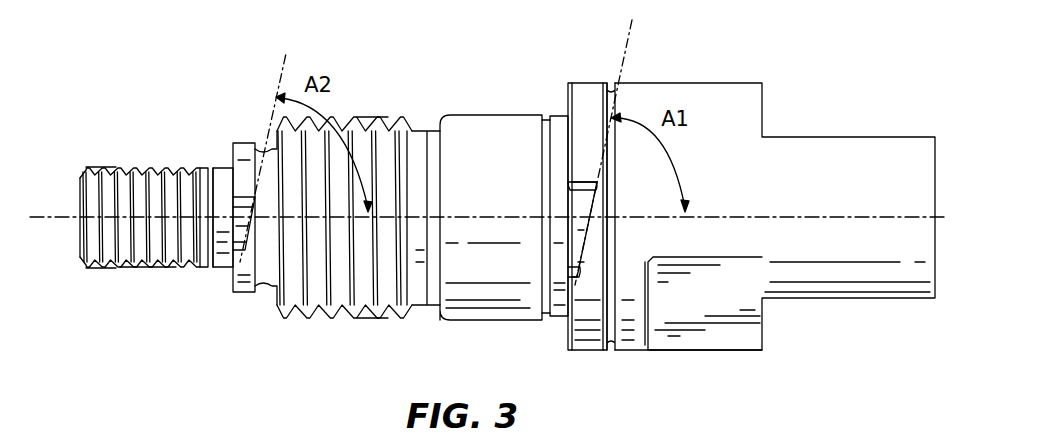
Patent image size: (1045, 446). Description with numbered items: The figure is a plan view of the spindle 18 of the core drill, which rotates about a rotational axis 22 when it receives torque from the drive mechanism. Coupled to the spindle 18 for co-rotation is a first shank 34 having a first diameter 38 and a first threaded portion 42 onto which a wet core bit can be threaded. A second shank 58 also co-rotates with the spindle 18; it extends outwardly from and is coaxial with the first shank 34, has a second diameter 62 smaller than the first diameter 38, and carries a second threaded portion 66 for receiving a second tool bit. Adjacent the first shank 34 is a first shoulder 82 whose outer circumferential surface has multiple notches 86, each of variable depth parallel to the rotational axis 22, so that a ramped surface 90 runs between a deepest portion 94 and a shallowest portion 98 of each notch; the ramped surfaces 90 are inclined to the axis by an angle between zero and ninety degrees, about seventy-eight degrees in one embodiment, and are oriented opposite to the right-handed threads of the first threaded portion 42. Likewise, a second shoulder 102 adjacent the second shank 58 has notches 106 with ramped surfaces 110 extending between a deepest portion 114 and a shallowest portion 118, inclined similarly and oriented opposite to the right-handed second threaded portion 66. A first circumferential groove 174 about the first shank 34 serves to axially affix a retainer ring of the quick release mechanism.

The spindle 18 is at (733, 92).
The rotational axis 22 is at (74, 224).
The first shank 34 is at (468, 152).
The first diameter 38 is at (372, 325).
The first threaded portion 42 is at (415, 207).
The second shank 58 is at (226, 175).
The second diameter 62 is at (100, 275).
The second threaded portion 66 is at (140, 270).
The first shoulder 82 is at (590, 100).
The notches 86 is at (575, 208).
The ramped surface 90 is at (583, 230).
The deepest portion 94 is at (570, 182).
The shallowest portion 98 is at (568, 263).
The second shoulder 102 is at (250, 148).
The notches 106 is at (237, 203).
The ramped surface 110 is at (237, 223).
The deepest portion 114 is at (205, 169).
The shallowest portion 118 is at (237, 245).
The first circumferential groove 174 is at (545, 316).